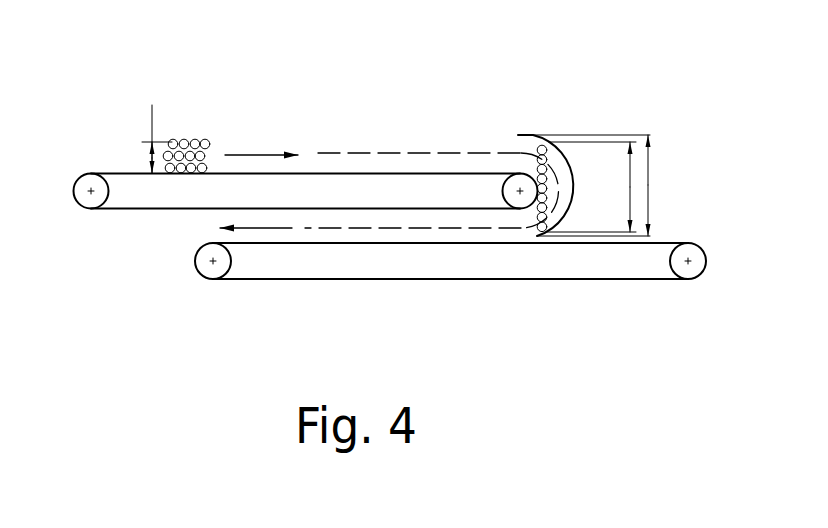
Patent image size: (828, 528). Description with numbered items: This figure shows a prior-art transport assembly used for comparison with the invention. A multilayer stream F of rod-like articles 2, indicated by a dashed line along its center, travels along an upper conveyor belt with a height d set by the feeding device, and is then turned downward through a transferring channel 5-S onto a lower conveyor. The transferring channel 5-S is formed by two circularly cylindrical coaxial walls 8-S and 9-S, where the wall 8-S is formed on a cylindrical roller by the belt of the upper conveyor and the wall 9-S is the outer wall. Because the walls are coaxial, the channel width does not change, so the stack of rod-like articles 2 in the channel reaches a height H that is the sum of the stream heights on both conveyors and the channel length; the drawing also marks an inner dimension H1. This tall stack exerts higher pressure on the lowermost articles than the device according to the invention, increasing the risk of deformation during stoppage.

The rod-like articles 2 is at (204, 143).
The height of the multilayer stream d is at (148, 137).
The multilayer stream F is at (412, 152).
The wall 8-S is at (519, 174).
The wall 9-S is at (532, 135).
The transferring channel 5-S is at (578, 127).
The inner height of turning section H1 is at (591, 187).
The height of the stack H is at (608, 185).